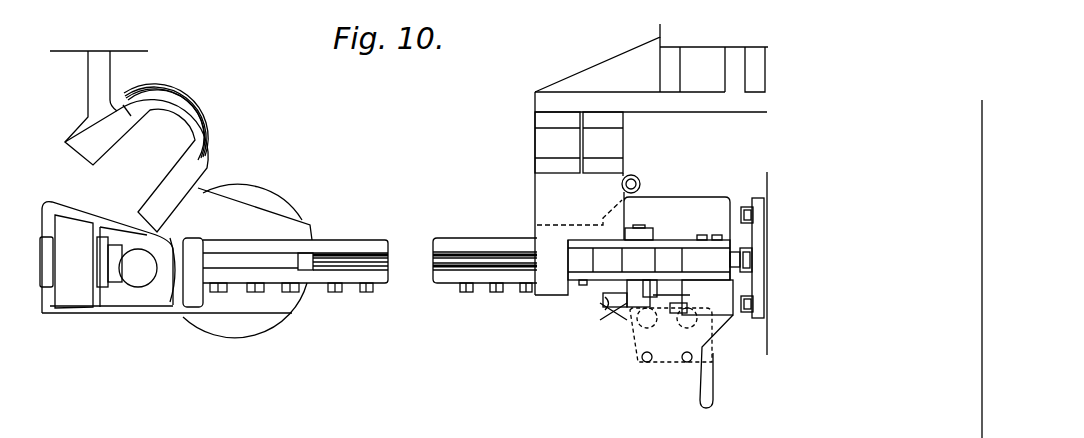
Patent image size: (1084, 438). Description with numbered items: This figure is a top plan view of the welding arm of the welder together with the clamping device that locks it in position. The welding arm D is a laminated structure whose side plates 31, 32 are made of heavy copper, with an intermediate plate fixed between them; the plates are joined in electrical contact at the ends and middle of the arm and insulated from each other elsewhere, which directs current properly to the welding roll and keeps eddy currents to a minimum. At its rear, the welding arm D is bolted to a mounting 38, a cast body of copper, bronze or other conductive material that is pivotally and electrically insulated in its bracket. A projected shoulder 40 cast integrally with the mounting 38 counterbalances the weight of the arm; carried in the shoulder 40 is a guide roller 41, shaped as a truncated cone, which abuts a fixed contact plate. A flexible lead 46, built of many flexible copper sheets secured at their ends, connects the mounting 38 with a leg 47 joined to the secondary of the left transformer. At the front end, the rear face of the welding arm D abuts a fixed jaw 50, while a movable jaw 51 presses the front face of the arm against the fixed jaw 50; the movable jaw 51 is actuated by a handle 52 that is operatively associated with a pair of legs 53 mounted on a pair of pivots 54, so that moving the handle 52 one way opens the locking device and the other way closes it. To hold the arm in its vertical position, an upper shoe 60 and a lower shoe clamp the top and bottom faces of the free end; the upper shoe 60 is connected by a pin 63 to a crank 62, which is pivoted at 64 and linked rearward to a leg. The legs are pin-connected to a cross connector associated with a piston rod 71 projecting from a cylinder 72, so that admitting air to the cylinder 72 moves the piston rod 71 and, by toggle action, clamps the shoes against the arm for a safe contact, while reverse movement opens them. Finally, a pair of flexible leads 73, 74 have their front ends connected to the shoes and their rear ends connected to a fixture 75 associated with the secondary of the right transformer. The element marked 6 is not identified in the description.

The leg 47 is at (88, 80).
The flexible lead 46 is at (197, 132).
The mounting 38 is at (255, 195).
The guide roller 41 is at (166, 257).
The shoulder 40 is at (112, 267).
The side plate 32 is at (342, 242).
The welding arm D is at (407, 249).
The side plate 31 is at (384, 286).
The upper shoe 60 is at (527, 193).
The crank 62 is at (649, 260).
The pivot 64 is at (654, 260).
The pin 63 is at (582, 282).
The movable jaw 51 is at (613, 310).
The legs 53 is at (671, 335).
The pivots 54 is at (645, 360).
The handle 52 is at (713, 380).
The fixed jaw 50 is at (677, 236).
The ring 6 is at (658, 176).
The piston rod 71 is at (737, 253).
The cylinder 72 is at (760, 243).
The flexible lead 73 is at (557, 142).
The flexible lead 74 is at (603, 142).
The fixture 75 is at (658, 55).